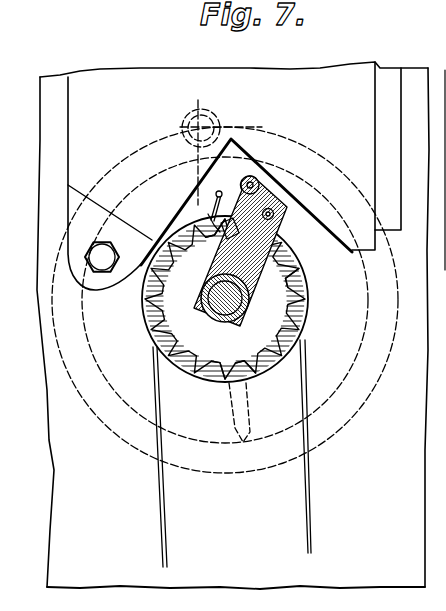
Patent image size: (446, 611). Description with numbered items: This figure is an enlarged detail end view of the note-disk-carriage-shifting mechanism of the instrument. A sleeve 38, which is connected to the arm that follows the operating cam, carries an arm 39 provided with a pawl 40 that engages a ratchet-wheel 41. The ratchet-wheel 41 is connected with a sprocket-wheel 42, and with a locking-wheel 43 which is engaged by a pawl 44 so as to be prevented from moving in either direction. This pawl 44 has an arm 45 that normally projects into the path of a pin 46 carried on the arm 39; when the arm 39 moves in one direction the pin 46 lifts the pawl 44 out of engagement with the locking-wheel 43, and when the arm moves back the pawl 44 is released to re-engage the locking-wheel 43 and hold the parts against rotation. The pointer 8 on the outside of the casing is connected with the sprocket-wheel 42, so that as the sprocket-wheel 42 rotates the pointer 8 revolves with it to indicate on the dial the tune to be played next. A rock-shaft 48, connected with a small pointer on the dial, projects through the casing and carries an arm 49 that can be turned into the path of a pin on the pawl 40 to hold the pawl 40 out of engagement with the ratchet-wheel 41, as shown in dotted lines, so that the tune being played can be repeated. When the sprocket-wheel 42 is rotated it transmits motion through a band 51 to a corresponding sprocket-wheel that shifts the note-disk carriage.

The pointer 8 is at (213, 126).
The sleeve 38 is at (205, 313).
The arm 39 is at (297, 265).
The pawl 40 is at (212, 240).
The ratchet-wheel 41 is at (221, 383).
The sprocket-wheel 42 is at (252, 362).
The locking-wheel 43 is at (280, 312).
The pawl 44 is at (283, 220).
The arm 45 is at (264, 178).
The pin 46 is at (250, 176).
The rock-shaft 48 is at (218, 191).
The arm 49 is at (212, 207).
The band 51 is at (308, 505).